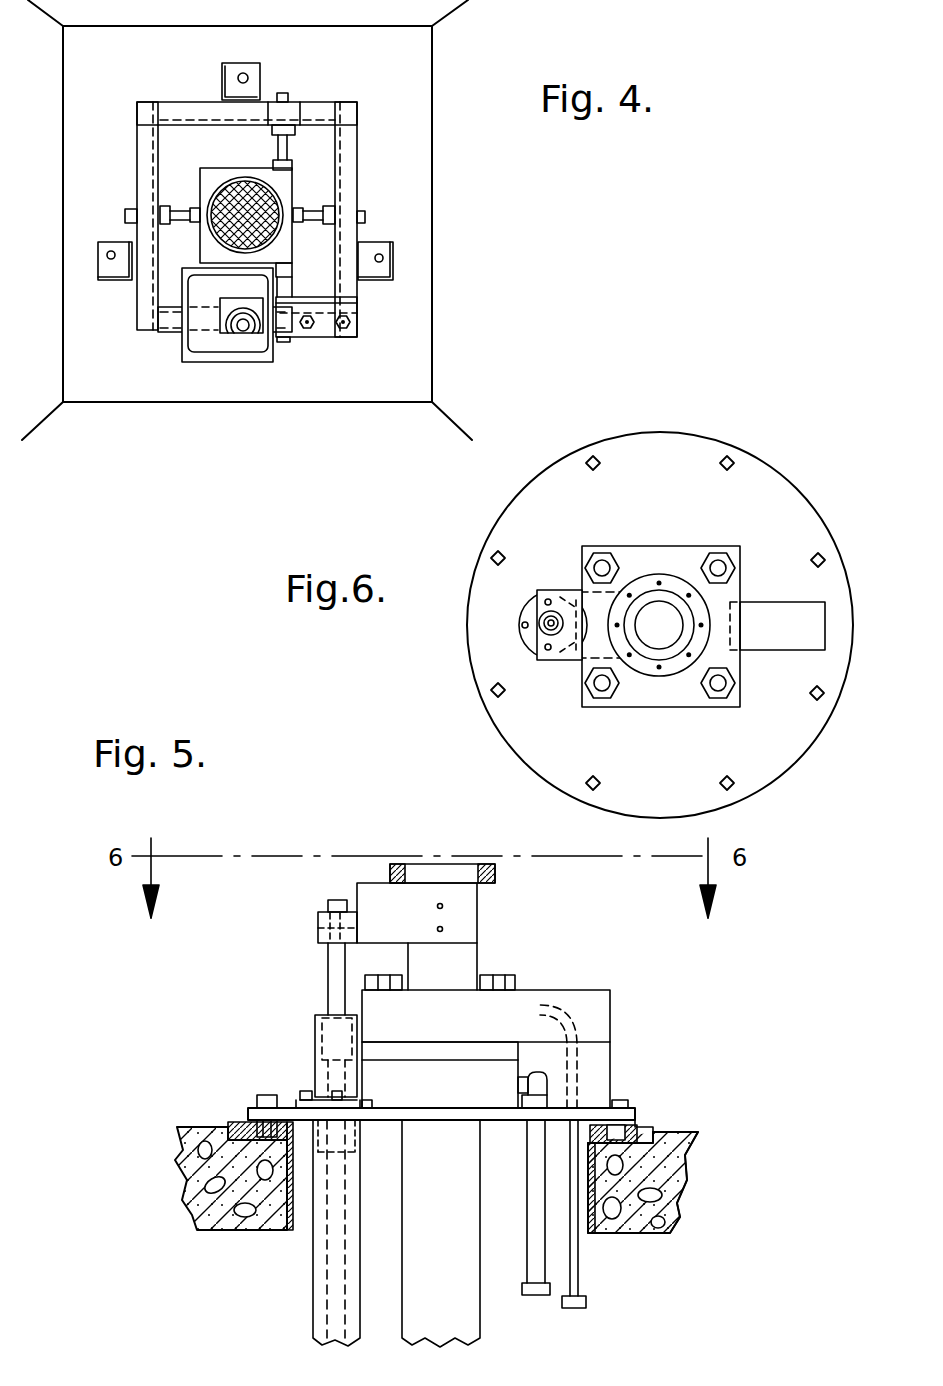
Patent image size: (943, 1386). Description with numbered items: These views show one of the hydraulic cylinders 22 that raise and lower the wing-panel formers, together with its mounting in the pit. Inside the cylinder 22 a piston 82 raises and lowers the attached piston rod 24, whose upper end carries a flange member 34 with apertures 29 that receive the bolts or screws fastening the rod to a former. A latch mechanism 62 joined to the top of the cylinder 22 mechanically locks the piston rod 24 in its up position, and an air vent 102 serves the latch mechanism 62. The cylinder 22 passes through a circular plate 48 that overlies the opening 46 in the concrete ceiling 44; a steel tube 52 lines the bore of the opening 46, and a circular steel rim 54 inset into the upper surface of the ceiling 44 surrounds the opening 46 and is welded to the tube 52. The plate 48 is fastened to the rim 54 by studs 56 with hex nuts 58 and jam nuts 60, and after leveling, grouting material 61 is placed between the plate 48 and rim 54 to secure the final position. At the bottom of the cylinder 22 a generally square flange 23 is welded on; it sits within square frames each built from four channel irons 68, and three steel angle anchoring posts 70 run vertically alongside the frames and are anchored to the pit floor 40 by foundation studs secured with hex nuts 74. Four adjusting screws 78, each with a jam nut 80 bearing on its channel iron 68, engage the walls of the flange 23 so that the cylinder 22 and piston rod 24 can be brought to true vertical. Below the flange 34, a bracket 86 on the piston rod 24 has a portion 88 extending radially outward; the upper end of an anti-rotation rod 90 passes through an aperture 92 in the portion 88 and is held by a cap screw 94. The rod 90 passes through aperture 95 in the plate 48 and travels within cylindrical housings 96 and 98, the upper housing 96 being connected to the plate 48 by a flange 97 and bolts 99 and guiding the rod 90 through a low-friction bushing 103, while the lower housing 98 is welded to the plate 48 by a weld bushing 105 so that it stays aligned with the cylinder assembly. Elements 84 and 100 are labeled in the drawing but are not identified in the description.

In FIG. 5, the cylinder 22 is at (482, 1320).
In FIG. 4, the square flange 23 is at (292, 172).
In FIG. 5, the piston rod 24 is at (478, 956).
In FIG. 5, the apertures 29 is at (405, 866).
In FIG. 6, the flange member 34 is at (675, 546).
In FIG. 5, the flange member 34 is at (441, 864).
In FIG. 4, the pit floor 40 is at (415, 52).
In FIG. 5, the concrete ceiling 44 is at (670, 1195).
In FIG. 5, the opening 46 is at (200, 1183).
In FIG. 6, the circular plate 48 is at (783, 510).
In FIG. 5, the circular plate 48 is at (433, 1104).
In FIG. 5, the steel tube 52 is at (295, 1210).
In FIG. 5, the circular steel rim 54 is at (642, 1155).
In FIG. 5, the studs 56 is at (600, 1133).
In FIG. 6, the hex nuts 58 is at (727, 463).
In FIG. 5, the hex nuts 58 is at (620, 1100).
In FIG. 5, the jam nuts 60 is at (640, 1110).
In FIG. 5, the grouting material 61 is at (648, 1127).
In FIG. 5, the latch mechanism 62 is at (441, 1000).
In FIG. 4, the channel irons 68 is at (173, 107).
In FIG. 4, the steel angle anchoring posts 70 is at (98, 262).
In FIG. 4, the hex nuts 74 is at (395, 258).
In FIG. 4, the adjusting screws 78 is at (308, 103).
In FIG. 4, the jam nuts 80 is at (345, 236).
In FIG. 4, the piston 82 is at (247, 172).
In FIG. 4, the block support 84 is at (292, 198).
In FIG. 5, the bracket 86 is at (375, 883).
In FIG. 5, the bracket portion 88 is at (318, 936).
In FIG. 4, the anti-rotation rod 90 is at (243, 333).
In FIG. 5, the anti-rotation rod 90 is at (328, 968).
In FIG. 5, the aperture 92 is at (318, 903).
In FIG. 6, the cap screw 94 is at (517, 628).
In FIG. 5, the cap screw 94 is at (338, 897).
In FIG. 5, the aperture 95 is at (362, 1103).
In FIG. 5, the cylindrical housing 96 is at (318, 1042).
In FIG. 5, the flange 97 is at (290, 1100).
In FIG. 5, the cylindrical housing 98 is at (313, 1290).
In FIG. 5, the bolts 99 is at (330, 1091).
In FIG. 5, the tie rod 100 is at (527, 1246).
In FIG. 5, the air vent 102 is at (579, 1272).
In FIG. 5, the low-friction bushing 103 is at (315, 1030).
In FIG. 5, the weld bushing 105 is at (357, 1167).